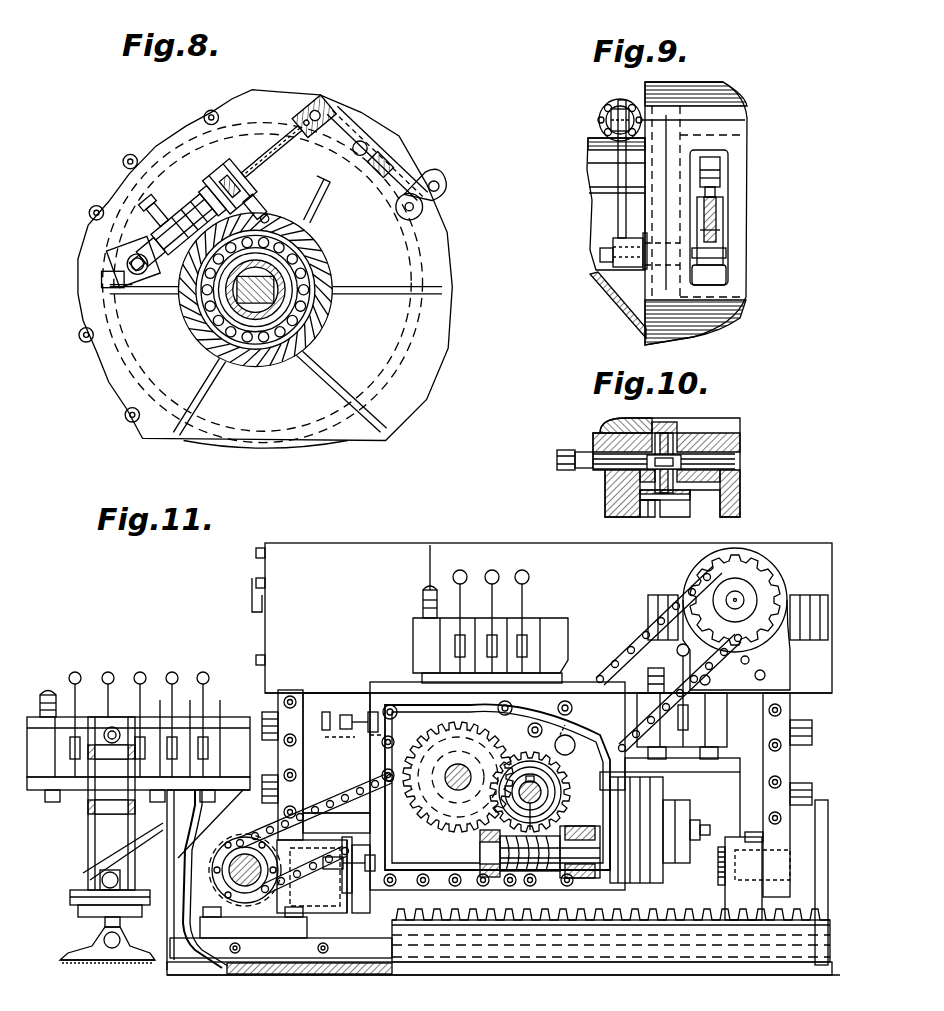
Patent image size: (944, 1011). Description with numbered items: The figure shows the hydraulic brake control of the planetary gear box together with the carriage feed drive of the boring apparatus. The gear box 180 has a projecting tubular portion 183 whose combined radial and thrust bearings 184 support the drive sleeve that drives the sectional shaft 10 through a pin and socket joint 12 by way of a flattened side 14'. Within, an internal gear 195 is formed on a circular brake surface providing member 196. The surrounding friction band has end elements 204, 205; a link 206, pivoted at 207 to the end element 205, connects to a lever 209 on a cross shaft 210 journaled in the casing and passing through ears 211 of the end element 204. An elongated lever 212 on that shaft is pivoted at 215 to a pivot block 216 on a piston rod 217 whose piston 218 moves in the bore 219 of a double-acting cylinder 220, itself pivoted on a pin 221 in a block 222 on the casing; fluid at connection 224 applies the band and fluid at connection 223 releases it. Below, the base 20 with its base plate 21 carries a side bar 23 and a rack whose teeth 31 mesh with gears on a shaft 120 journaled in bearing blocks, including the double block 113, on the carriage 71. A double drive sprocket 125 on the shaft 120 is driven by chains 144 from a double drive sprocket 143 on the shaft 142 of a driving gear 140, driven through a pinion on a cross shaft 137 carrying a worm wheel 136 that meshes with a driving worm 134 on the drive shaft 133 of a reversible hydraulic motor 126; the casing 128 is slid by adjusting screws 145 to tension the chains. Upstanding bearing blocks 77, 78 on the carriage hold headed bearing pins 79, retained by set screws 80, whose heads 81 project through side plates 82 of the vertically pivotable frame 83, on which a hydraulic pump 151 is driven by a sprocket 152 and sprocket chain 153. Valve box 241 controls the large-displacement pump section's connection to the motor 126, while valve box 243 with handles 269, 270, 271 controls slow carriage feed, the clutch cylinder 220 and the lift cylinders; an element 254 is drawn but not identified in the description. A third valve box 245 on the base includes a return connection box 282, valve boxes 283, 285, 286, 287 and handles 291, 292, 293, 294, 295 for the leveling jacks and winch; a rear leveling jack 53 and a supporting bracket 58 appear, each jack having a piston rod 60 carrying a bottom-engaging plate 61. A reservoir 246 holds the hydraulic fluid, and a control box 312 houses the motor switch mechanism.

In FIG. 8, the sectional shaft 10 is at (444, 123).
In FIG. 8, the flattened side 14' is at (299, 302).
In FIG. 8, the gear box 180 is at (410, 405).
In FIG. 9, the gear box 180 is at (645, 338).
In FIG. 10, the gear box 180 is at (740, 497).
In FIG. 8, the projecting tubular portion 183 is at (256, 362).
In FIG. 9, the projecting tubular portion 183 is at (600, 290).
In FIG. 8, the combined radial and thrust bearings 184 is at (205, 318).
In FIG. 8, the end element 204 is at (400, 247).
In FIG. 9, the end element 204 is at (720, 275).
In FIG. 10, the end element 204 is at (740, 477).
In FIG. 8, the end element 205 is at (372, 162).
In FIG. 9, the end element 205 is at (722, 160).
In FIG. 8, the link 206 is at (418, 178).
In FIG. 9, the link 206 is at (716, 222).
In FIG. 10, the link 206 is at (672, 432).
In FIG. 8, the pivotal connection 207 is at (376, 150).
In FIG. 9, the pivotal connection 207 is at (742, 178).
In FIG. 8, the lever 209 is at (412, 200).
In FIG. 9, the lever 209 is at (722, 256).
In FIG. 10, the lever 209 is at (660, 422).
In FIG. 10, the cross shaft 210 is at (735, 460).
In FIG. 10, the ears 211 is at (700, 453).
In FIG. 8, the elongated lever 212 is at (338, 142).
In FIG. 9, the elongated lever 212 is at (618, 220).
In FIG. 8, the pivotal connection 215 is at (322, 112).
In FIG. 9, the pivotal connection 215 is at (600, 122).
In FIG. 8, the pivot block 216 is at (318, 104).
In FIG. 9, the pivot block 216 is at (607, 112).
In FIG. 8, the piston rod 217 is at (270, 135).
In FIG. 8, the piston 218 is at (212, 186).
In FIG. 8, the bore 219 is at (200, 198).
In FIG. 9, the bore 219 is at (620, 100).
In FIG. 8, the cylinder 220 is at (167, 212).
In FIG. 8, the pin 221 is at (129, 258).
In FIG. 8, the block 222 is at (108, 276).
In FIG. 8, the fluid supply and exhaust connection 223 is at (203, 146).
In FIG. 8, the fluid supply and exhaust connection 224 is at (128, 222).
In FIG. 10, the internal gear 195 is at (645, 503).
In FIG. 10, the circular brake surface providing member 196 is at (640, 492).
In FIG. 11, the control box 312 is at (325, 548).
In FIG. 11, the reservoir 246 is at (612, 545).
In FIG. 11, the valve box 243 is at (568, 620).
In FIG. 11, the control handle 271 is at (468, 562).
In FIG. 11, the control handle 270 is at (492, 570).
In FIG. 11, the control handle 269 is at (524, 570).
In FIG. 11, the hydraulic pump 151 is at (785, 575).
In FIG. 11, the sprocket 152 is at (742, 572).
In FIG. 11, the sprocket chain 153 is at (702, 582).
In FIG. 11, the valve box 241 is at (648, 660).
In FIG. 11, the valve unit 254 is at (690, 712).
In FIG. 11, the vertically pivotable frame 83 is at (792, 710).
In FIG. 11, the side plates 82 is at (292, 760).
In FIG. 11, the adjusting screws 145 is at (347, 716).
In FIG. 11, the double drive sprocket 143 is at (372, 768).
In FIG. 11, the driving gear 140 is at (430, 712).
In FIG. 11, the shaft 142 is at (458, 764).
In FIG. 11, the cross shaft 137 is at (530, 816).
In FIG. 11, the casing 128 is at (440, 885).
In FIG. 11, the driving worm 134 is at (505, 858).
In FIG. 11, the drive shaft 133 is at (565, 855).
In FIG. 11, the reversible hydraulic motor 126 is at (615, 882).
In FIG. 11, the pin and socket joint 12 is at (318, 780).
In FIG. 11, the worm wheel 136 is at (560, 758).
In FIG. 11, the return connection box 282 is at (40, 780).
In FIG. 11, the valve box 283 is at (55, 680).
In FIG. 11, the control handle 291 is at (74, 671).
In FIG. 11, the control handle 292 is at (108, 671).
In FIG. 11, the control handle 293 is at (142, 671).
In FIG. 11, the control handle 294 is at (174, 672).
In FIG. 11, the control handle 295 is at (205, 672).
In FIG. 11, the valve box 285 is at (156, 716).
In FIG. 11, the valve box 286 is at (180, 716).
In FIG. 11, the valve box 287 is at (212, 716).
In FIG. 11, the valve box 245 is at (250, 704).
In FIG. 11, the hydraulic leveling jack 53 is at (88, 845).
In FIG. 11, the bracket 58 is at (90, 876).
In FIG. 11, the piston rods 60 is at (95, 928).
In FIG. 11, the bottom-engaging plates 61 is at (75, 963).
In FIG. 11, the bearing block 113 is at (232, 900).
In FIG. 11, the shaft 120 is at (245, 855).
In FIG. 11, the chains 144 is at (325, 812).
In FIG. 11, the set screws 80 is at (306, 826).
In FIG. 11, the double drive sprocket 125 is at (283, 882).
In FIG. 11, the headed bearing-providing pins 79 is at (318, 866).
In FIG. 11, the heads 81 is at (718, 866).
In FIG. 11, the bearing block 78 is at (355, 890).
In FIG. 11, the carriage 71 is at (330, 958).
In FIG. 11, the base plate 21 is at (309, 981).
In FIG. 11, the base 20 is at (503, 987).
In FIG. 11, the bar 23 is at (722, 950).
In FIG. 11, the teeth 31 is at (742, 920).
In FIG. 11, the bearing block 77 is at (755, 905).